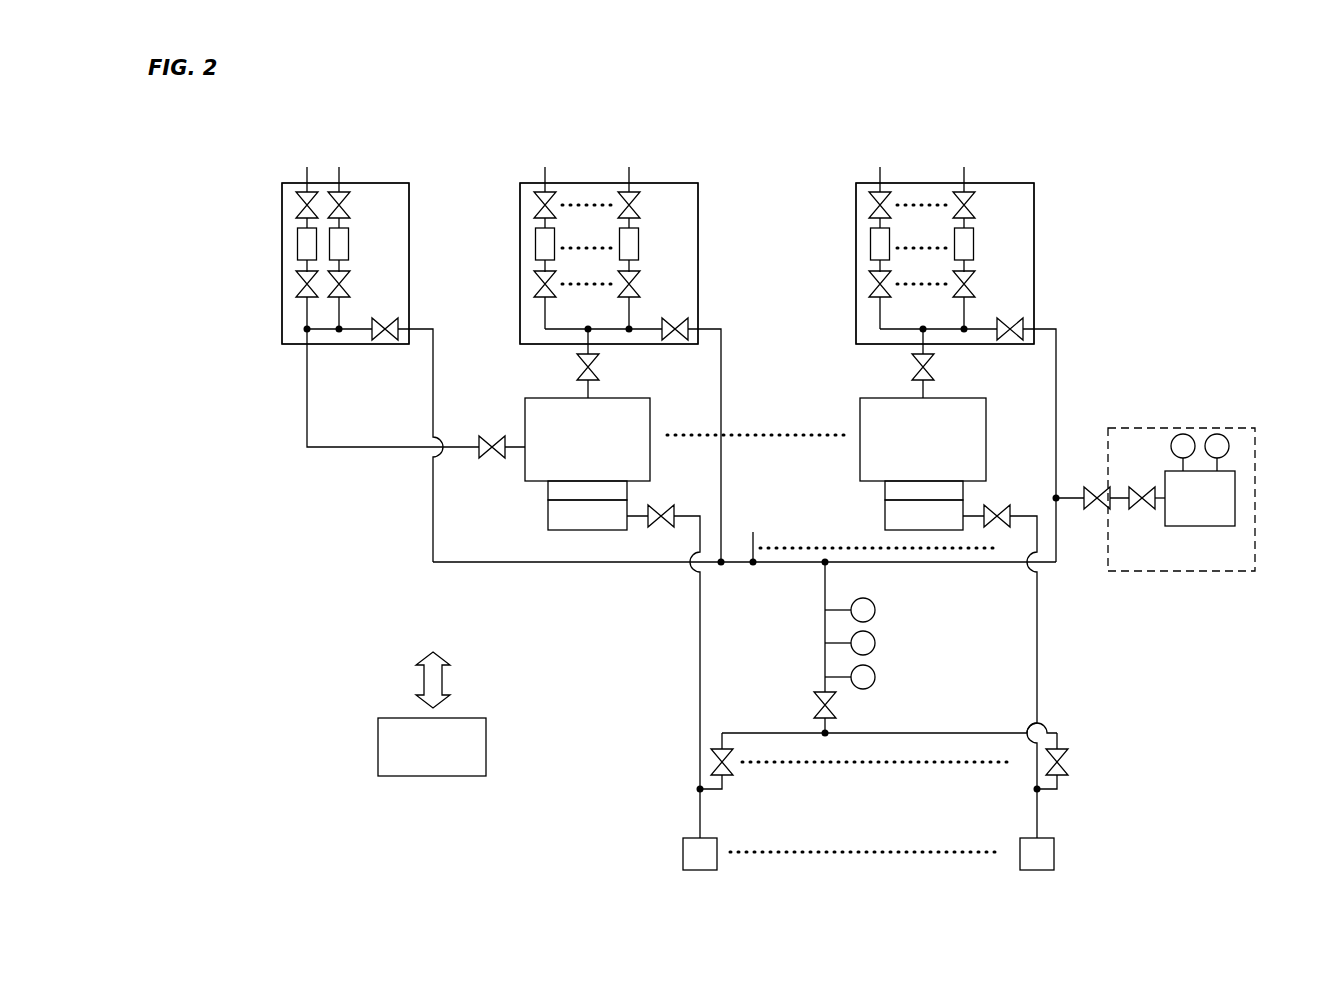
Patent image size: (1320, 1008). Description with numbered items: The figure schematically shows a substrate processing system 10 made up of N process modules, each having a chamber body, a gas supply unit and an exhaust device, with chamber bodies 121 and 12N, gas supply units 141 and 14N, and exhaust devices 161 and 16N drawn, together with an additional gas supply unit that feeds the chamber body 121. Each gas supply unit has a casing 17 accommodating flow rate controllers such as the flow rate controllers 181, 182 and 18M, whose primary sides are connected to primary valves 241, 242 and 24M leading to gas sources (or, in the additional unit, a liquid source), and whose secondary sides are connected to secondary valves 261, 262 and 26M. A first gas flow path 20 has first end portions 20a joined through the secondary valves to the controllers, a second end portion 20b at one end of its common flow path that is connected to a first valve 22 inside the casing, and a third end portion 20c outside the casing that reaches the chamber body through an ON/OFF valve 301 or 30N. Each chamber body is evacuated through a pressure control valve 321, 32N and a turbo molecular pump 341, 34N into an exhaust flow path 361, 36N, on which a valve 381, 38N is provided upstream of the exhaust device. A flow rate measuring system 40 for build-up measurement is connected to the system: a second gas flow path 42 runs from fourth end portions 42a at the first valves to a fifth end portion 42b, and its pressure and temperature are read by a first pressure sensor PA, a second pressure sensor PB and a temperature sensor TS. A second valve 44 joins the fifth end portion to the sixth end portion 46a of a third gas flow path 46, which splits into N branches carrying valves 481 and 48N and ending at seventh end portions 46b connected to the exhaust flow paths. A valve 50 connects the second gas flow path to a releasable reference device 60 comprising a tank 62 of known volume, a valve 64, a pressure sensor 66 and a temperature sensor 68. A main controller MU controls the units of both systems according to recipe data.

The substrate processing system 10 is at (1145, 183).
The chamber body 121 is at (650, 447).
The chamber body 12N is at (986, 435).
The gas supply unit 141 is at (706, 176).
The gas supply unit 14N is at (1044, 176).
The exhaust device 161 is at (683, 853).
The exhaust device 16N is at (1054, 853).
The casing 17 is at (409, 250).
The flow rate controller 181 is at (297, 244).
The flow rate controller 182 is at (349, 248).
The flow rate controller 18M is at (639, 243).
The first gas flow path 20 is at (325, 331).
The first end portion 20a is at (306, 302).
The second end portion 20b is at (362, 331).
The third end portion 20c is at (475, 449).
The first valve 22 is at (385, 341).
The primary valve 241 is at (296, 206).
The primary valve 242 is at (348, 194).
The primary valve 24M is at (641, 205).
The secondary valve 261 is at (534, 285).
The secondary valve 262 is at (296, 285).
The secondary valve 26M is at (641, 290).
The ON/OFF valve 301 is at (600, 369).
The ON/OFF valve 30N is at (935, 369).
The pressure control valve 321 is at (548, 490).
The pressure control valve 32N is at (885, 490).
The turbo molecular pump 341 is at (548, 515).
The turbo molecular pump 34N is at (885, 515).
The exhaust flow path 361 is at (700, 632).
The exhaust flow path 36N is at (1037, 640).
The valve 381 is at (665, 505).
The valve 38N is at (1000, 505).
The flow rate measuring system 40 is at (1000, 663).
The second gas flow path 42 is at (978, 564).
The fourth end portion 42a is at (398, 337).
The fifth end portion 42b is at (820, 692).
The second valve 44 is at (838, 706).
The third gas flow path 46 is at (985, 733).
The sixth end portion 46a is at (820, 727).
The seventh end portion 46b is at (702, 792).
The valve 481 is at (735, 768).
The valve 48N is at (1070, 765).
The valve 50 is at (1092, 510).
The reference device 60 is at (1232, 573).
The tank 62 is at (1212, 528).
The valve 64 is at (1140, 512).
The pressure sensor 66 is at (1178, 434).
The temperature sensor 68 is at (1222, 434).
The main controller MU is at (486, 748).
The second pressure sensor PB is at (875, 612).
The first pressure sensor PA is at (875, 645).
The temperature sensor TS is at (875, 679).